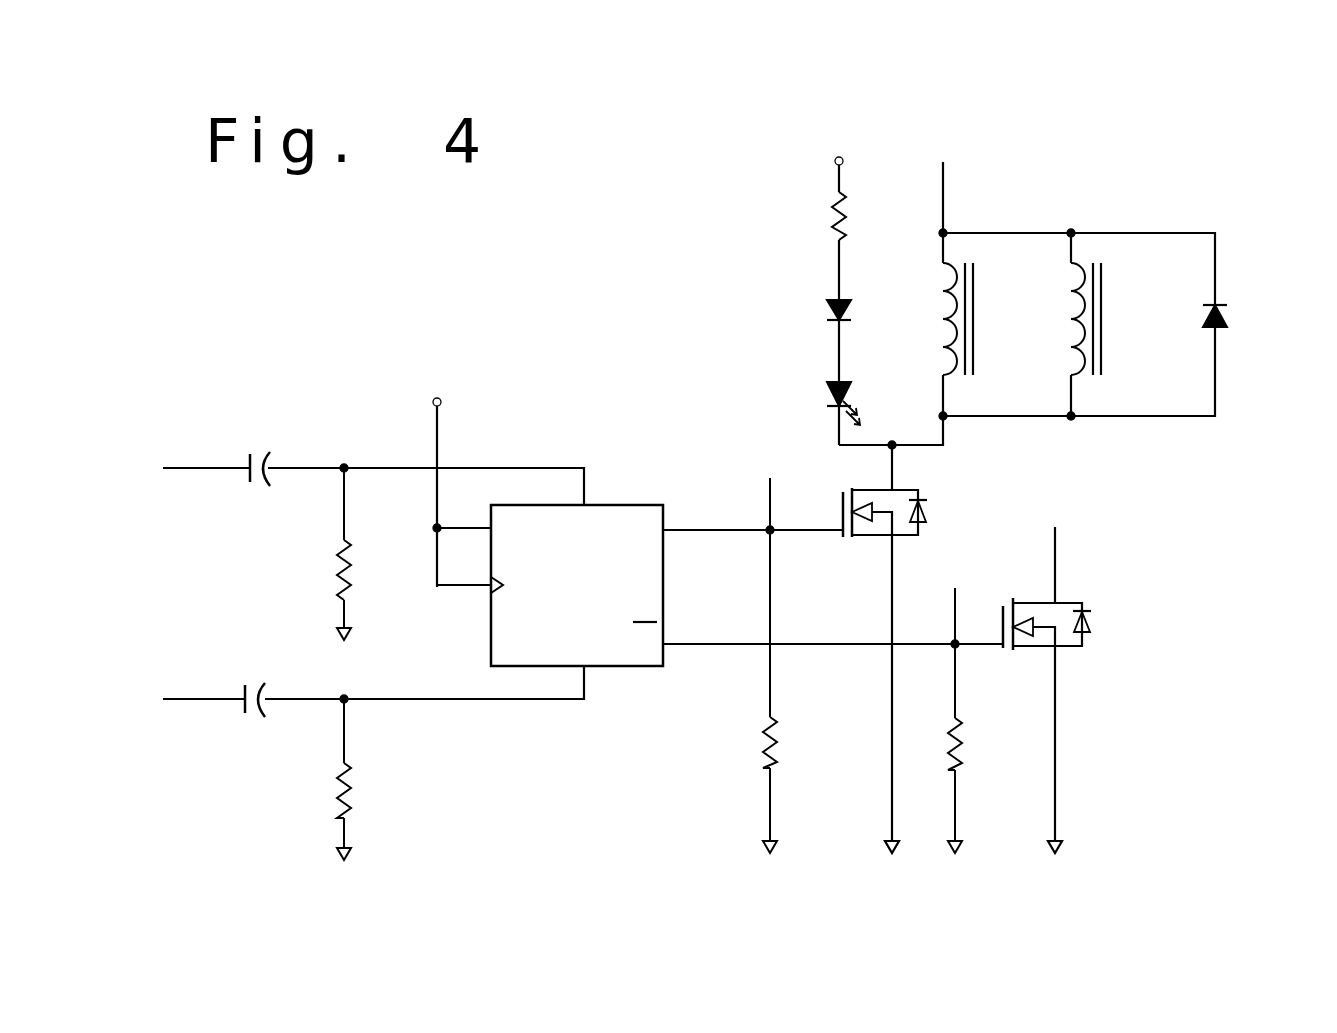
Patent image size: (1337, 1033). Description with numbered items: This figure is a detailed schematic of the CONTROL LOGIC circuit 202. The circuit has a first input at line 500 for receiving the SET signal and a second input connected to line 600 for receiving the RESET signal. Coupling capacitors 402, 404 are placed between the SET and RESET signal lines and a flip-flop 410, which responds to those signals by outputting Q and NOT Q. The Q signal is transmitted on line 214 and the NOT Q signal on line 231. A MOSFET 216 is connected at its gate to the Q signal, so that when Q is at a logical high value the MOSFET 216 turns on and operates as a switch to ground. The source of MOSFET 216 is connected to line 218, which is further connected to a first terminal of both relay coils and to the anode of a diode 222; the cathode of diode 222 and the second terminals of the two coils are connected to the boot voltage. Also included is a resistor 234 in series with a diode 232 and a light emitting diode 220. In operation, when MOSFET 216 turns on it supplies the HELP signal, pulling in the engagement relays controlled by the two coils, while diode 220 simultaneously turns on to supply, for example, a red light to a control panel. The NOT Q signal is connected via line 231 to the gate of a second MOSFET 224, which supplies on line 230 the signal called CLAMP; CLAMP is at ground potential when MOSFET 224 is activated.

The CONTROL LOGIC circuit 202 is at (568, 292).
The line 500 is at (197, 468).
The coupling capacitor 402 is at (266, 455).
The line 600 is at (190, 699).
The coupling capacitor 404 is at (266, 686).
The flip-flop 410 is at (612, 666).
The line 214 is at (770, 500).
The line 231 is at (727, 644).
The resistor 234 is at (839, 195).
The diode 232 is at (839, 300).
The light emitting diode 220 is at (839, 382).
The line 218 is at (878, 468).
The MOSFET 216 is at (918, 497).
The diode 222 is at (1220, 327).
The line 230 is at (1057, 582).
The second MOSFET 224 is at (1075, 650).